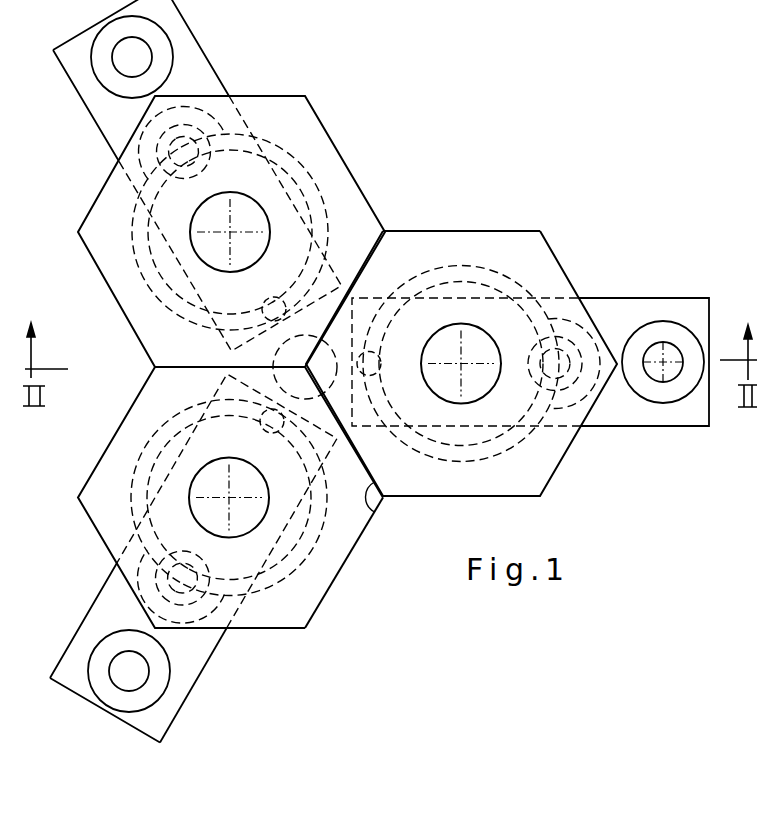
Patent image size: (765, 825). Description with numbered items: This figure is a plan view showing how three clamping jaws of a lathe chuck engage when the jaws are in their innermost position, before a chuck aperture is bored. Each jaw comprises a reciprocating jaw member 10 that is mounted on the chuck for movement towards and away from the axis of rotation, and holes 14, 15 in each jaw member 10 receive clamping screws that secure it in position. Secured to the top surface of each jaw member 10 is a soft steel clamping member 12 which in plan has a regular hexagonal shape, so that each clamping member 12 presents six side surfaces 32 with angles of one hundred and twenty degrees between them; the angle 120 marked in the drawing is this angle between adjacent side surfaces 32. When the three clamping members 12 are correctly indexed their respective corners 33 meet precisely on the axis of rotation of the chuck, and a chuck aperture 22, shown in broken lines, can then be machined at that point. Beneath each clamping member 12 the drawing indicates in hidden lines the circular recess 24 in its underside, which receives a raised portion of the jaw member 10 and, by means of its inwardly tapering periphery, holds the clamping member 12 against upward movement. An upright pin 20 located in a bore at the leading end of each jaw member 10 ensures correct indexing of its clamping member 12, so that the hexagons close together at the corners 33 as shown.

The jaw member 10 is at (214, 83).
The clamping member 12 is at (93, 215).
The hole 14 is at (160, 684).
The hole 15 is at (210, 650).
The upright pin 20 is at (337, 365).
The chuck aperture 22 is at (381, 280).
The recess 24 is at (468, 288).
The side surface 32 is at (407, 496).
The corner 33 is at (305, 366).
The 120 degree angle 120 is at (352, 497).